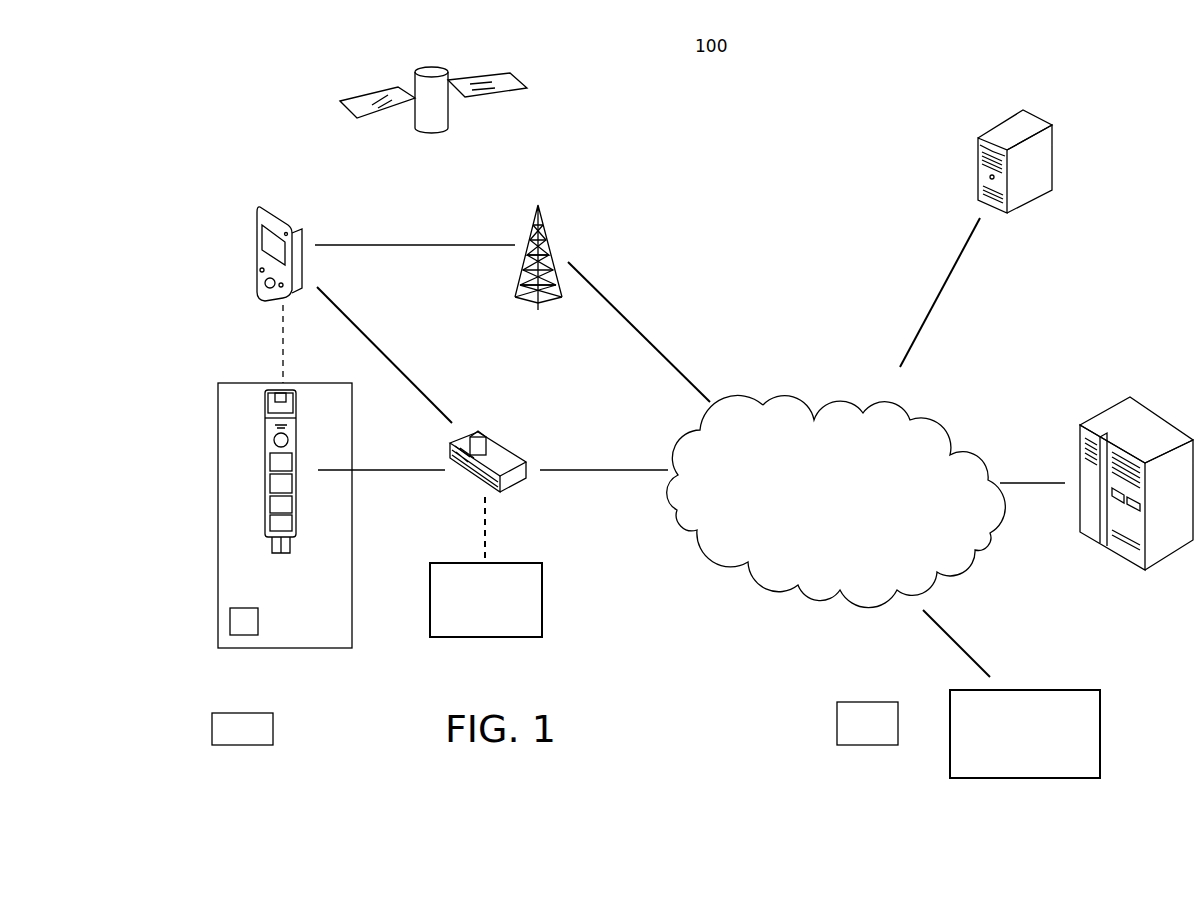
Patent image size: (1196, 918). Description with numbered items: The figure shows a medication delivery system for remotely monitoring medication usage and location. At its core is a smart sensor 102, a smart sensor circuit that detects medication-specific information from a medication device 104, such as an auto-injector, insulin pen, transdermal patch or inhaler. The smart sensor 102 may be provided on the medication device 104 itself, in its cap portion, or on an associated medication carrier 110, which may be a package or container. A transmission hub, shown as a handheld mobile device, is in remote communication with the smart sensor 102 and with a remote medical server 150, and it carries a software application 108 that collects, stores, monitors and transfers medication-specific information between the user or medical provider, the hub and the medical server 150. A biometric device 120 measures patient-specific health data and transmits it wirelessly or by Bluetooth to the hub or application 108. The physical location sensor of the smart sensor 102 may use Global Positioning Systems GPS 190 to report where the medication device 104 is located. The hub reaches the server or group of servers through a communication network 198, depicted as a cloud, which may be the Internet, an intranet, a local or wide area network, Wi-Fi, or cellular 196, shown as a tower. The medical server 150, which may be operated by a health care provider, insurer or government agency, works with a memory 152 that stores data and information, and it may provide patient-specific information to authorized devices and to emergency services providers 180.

The smart sensor 102 is at (218, 619).
The medication device 104 is at (258, 447).
The software application 108 is at (478, 435).
The medication carrier 110 is at (247, 713).
The biometric device 120 is at (542, 588).
The medical server 150 is at (1118, 403).
The memory 152 is at (995, 125).
The emergency services providers 180 is at (948, 718).
The Global Positioning Systems GPS 190 is at (412, 84).
The cellular 196 is at (527, 237).
The communication network 198 is at (835, 402).